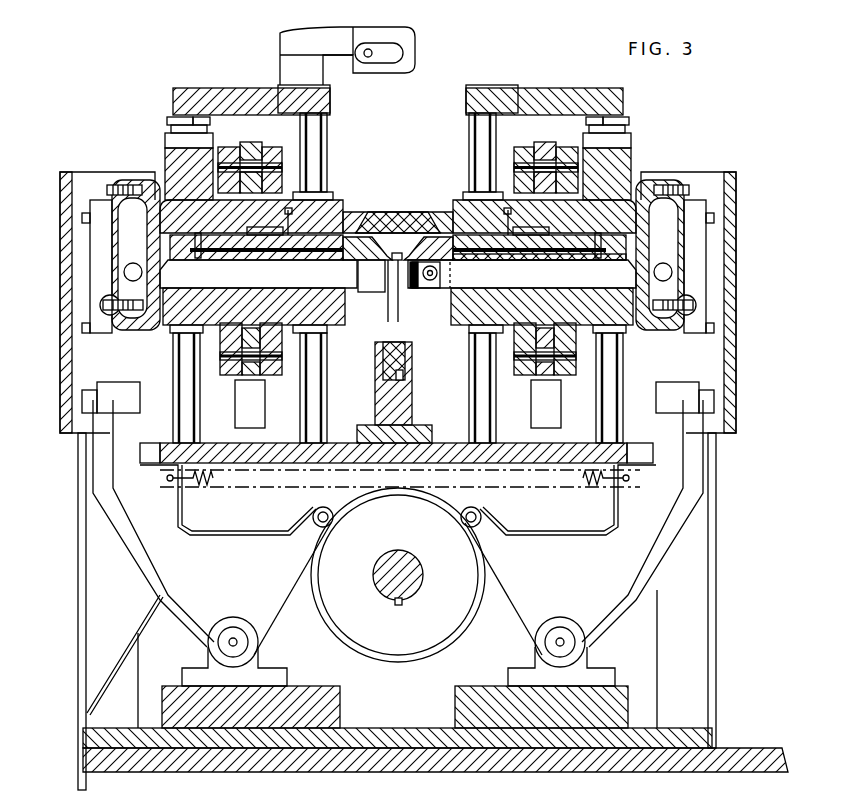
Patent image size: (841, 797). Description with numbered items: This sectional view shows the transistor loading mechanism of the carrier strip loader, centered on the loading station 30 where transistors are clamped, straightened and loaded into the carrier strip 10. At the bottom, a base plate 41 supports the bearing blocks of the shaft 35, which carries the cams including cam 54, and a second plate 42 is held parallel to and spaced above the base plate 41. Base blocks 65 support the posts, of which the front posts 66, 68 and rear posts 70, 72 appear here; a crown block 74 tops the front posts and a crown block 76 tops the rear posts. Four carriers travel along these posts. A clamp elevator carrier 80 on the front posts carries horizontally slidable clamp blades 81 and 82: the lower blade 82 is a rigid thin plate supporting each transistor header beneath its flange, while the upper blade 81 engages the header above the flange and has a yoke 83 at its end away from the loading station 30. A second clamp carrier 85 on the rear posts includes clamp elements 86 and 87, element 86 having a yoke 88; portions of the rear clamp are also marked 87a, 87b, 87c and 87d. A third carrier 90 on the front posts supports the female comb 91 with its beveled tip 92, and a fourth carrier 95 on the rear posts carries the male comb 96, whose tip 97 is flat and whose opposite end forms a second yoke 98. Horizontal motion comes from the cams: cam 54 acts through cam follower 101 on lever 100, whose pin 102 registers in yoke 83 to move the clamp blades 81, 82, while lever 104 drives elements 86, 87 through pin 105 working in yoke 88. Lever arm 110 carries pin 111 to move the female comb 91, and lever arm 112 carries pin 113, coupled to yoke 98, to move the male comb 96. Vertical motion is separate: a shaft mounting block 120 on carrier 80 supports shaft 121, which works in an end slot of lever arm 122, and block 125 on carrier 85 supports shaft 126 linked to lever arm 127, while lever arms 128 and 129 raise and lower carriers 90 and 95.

The carrier strip 10 is at (376, 370).
The loading station 30 is at (403, 213).
The shaft 35 is at (421, 596).
The base plate 41 is at (672, 727).
The second plate 42 is at (703, 453).
The cam 54 is at (412, 660).
The base blocks 65 is at (340, 705).
The front post 66 is at (200, 507).
The front post 68 is at (310, 507).
The rear post 70 is at (490, 500).
The rear post 72 is at (593, 517).
The crown block 74 is at (198, 88).
The crown block 76 is at (493, 88).
The clamp elevator carrier 80 is at (336, 210).
The upper clamp blade 81 is at (391, 212).
The lower clamp blade 82 is at (352, 243).
The yoke 83 is at (132, 182).
The second clamp carrier 85 is at (458, 200).
The clamp element 86 is at (453, 234).
The clamp element 87 is at (425, 250).
The die insert portion 87a is at (468, 258).
The die insert portion 87b is at (540, 233).
The die insert screw 87c is at (503, 232).
The die insert screw 87d is at (582, 250).
The yoke 88 is at (663, 182).
The third carrier 90 is at (345, 316).
The female comb 91 is at (293, 283).
The beveled tip 92 is at (90, 210).
The fourth carrier 95 is at (455, 321).
The male comb element 96 is at (557, 283).
The tip 97 is at (430, 282).
The second yoke 98 is at (705, 252).
The lever 100 is at (243, 585).
The cam follower 101 is at (330, 523).
The pin 102 is at (143, 272).
The lever 104 is at (580, 585).
The pin 105 is at (652, 272).
The lever arm 110 is at (127, 548).
The pin 111 is at (103, 303).
The lever arm 112 is at (660, 555).
The pin 113 is at (696, 305).
The shaft mounting block 120 is at (234, 147).
The shaft 121 is at (312, 164).
The lever arm 122 is at (246, 148).
The shaft mounting block 125 is at (568, 148).
The shaft 126 is at (492, 165).
The lever arm 127 is at (543, 147).
The lever arm 128 is at (246, 376).
The lever arm 129 is at (545, 378).